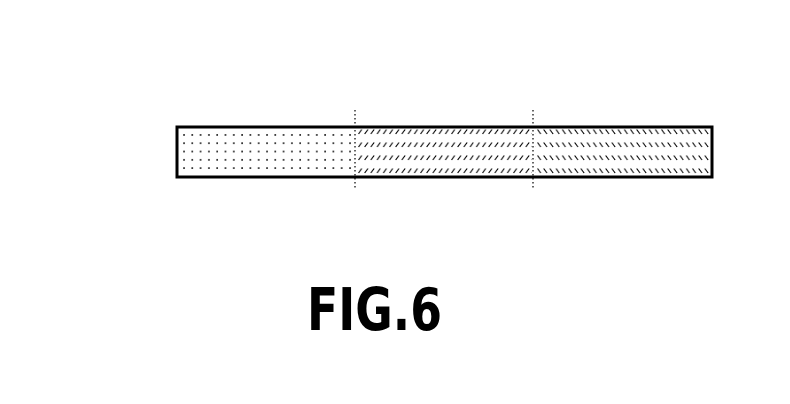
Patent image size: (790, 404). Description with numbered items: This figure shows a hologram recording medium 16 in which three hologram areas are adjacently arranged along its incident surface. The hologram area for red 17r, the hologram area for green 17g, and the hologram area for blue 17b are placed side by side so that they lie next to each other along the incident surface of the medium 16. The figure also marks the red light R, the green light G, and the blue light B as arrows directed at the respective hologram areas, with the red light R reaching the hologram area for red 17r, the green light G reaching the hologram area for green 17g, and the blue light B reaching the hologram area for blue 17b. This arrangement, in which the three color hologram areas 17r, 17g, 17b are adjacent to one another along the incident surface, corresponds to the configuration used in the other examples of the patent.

The color filter 16 is at (174, 158).
The hologram area for red 17r is at (225, 164).
The hologram area for green 17g is at (422, 164).
The hologram area for blue 17b is at (573, 164).
The red light R is at (332, 258).
The green light G is at (518, 258).
The blue light B is at (688, 258).